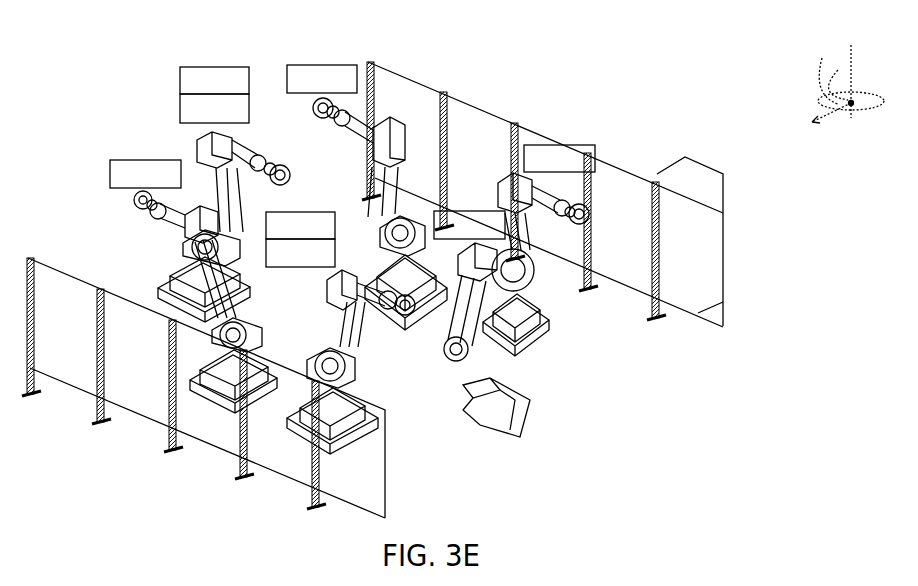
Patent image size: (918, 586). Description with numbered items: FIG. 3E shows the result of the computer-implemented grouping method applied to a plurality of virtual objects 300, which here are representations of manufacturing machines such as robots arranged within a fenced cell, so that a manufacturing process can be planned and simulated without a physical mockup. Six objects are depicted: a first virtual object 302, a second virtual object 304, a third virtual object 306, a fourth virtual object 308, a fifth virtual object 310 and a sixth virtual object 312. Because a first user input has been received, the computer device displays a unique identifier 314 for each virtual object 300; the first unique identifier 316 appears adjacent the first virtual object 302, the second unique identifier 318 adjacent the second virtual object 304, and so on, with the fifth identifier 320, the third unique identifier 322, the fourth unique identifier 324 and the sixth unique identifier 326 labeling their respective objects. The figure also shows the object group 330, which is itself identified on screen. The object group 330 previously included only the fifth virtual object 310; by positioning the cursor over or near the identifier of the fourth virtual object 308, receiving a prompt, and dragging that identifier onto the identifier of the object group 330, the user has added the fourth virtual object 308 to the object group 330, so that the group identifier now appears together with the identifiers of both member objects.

The virtual objects 300 is at (185, 64).
The first virtual object 302 is at (165, 282).
The second virtual object 304 is at (512, 378).
The third virtual object 306 is at (388, 116).
The fourth virtual object 308 is at (370, 440).
The fifth virtual object 310 is at (262, 182).
The sixth virtual object 312 is at (592, 240).
The unique identifier 314 is at (310, 53).
The first unique identifier 316 is at (193, 286).
The second unique identifier 318 is at (469, 225).
The fifth identifier 320 is at (330, 104).
The third unique identifier 322 is at (340, 277).
The fourth unique identifier 324 is at (214, 108).
The sixth unique identifier 326 is at (546, 197).
The object group 330 is at (257, 153).